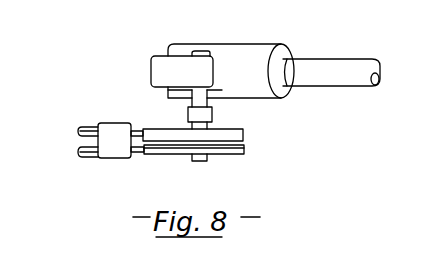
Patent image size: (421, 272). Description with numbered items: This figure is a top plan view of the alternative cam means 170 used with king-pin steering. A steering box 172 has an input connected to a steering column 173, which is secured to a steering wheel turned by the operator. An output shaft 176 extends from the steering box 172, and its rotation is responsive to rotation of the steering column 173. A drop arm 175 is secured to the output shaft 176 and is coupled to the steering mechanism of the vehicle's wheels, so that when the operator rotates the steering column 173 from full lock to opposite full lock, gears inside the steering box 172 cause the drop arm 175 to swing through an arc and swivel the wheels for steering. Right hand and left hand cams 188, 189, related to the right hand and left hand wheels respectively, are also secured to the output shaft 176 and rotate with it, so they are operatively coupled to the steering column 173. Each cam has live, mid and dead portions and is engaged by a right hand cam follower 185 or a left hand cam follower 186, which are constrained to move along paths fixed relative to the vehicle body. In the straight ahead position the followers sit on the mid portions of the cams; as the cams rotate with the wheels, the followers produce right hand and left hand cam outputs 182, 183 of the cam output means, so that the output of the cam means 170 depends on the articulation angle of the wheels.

The cam means 170 is at (189, 162).
The steering box 172 is at (233, 66).
The steering column 173 is at (312, 66).
The drop arm 175 is at (213, 113).
The output shaft 176 is at (186, 126).
The right hand cam output 182 is at (80, 130).
The left hand cam output 183 is at (80, 152).
The right hand cam follower 185 is at (141, 122).
The left hand cam follower 186 is at (143, 153).
The right hand cam 188 is at (244, 133).
The left hand cam 189 is at (245, 150).